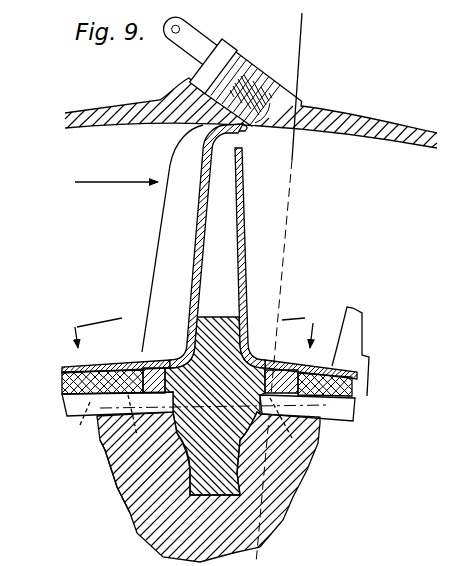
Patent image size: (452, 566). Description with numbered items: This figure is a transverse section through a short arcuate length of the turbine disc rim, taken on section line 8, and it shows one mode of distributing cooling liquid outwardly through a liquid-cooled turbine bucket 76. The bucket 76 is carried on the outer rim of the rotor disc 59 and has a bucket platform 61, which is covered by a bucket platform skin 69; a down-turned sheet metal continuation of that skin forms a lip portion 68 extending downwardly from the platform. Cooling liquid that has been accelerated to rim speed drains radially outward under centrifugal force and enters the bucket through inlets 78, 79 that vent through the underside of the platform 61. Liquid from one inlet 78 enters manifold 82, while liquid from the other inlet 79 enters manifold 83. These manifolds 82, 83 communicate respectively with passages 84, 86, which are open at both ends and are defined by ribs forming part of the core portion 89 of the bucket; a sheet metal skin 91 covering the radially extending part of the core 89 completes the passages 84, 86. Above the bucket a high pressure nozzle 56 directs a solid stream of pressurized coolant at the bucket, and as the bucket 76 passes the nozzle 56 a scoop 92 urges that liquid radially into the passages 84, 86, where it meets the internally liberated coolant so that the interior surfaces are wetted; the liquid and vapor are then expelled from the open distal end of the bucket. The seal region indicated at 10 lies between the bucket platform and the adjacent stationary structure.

The section line 8 is at (268, 13).
The seal assembly 10 is at (193, 326).
The nozzle 56 is at (305, 109).
The rotor disc 59 is at (130, 506).
The bucket platform 61 is at (70, 362).
The lip portion 68 is at (75, 406).
The bucket platform skin 69 is at (157, 360).
The turbine bucket 76 is at (162, 231).
The inlet 78 is at (128, 473).
The inlet 79 is at (173, 428).
The manifold 82 is at (133, 362).
The manifold 83 is at (275, 368).
The passage 84 is at (188, 327).
The passage 86 is at (246, 353).
The core portion 89 is at (217, 327).
The sheet metal skin 91 is at (192, 262).
The scoop 92 is at (230, 135).